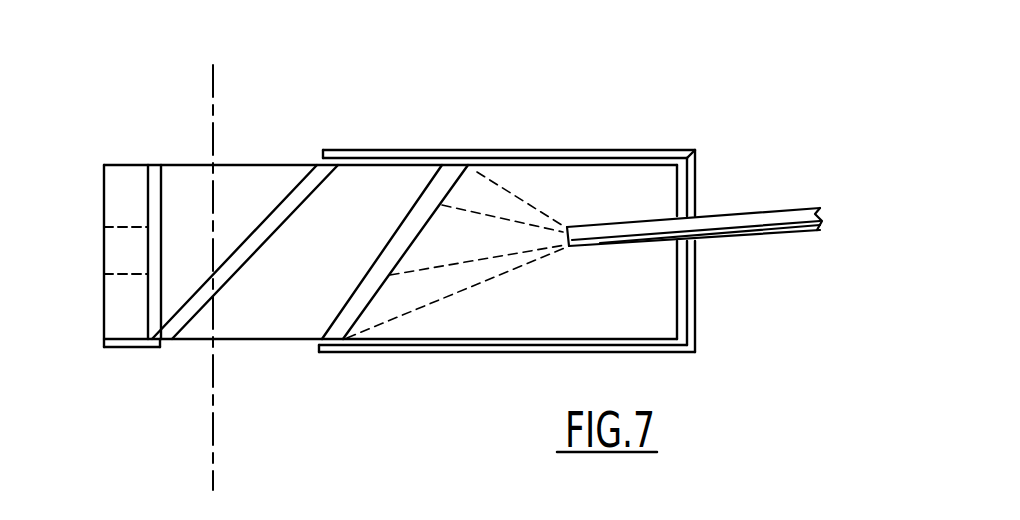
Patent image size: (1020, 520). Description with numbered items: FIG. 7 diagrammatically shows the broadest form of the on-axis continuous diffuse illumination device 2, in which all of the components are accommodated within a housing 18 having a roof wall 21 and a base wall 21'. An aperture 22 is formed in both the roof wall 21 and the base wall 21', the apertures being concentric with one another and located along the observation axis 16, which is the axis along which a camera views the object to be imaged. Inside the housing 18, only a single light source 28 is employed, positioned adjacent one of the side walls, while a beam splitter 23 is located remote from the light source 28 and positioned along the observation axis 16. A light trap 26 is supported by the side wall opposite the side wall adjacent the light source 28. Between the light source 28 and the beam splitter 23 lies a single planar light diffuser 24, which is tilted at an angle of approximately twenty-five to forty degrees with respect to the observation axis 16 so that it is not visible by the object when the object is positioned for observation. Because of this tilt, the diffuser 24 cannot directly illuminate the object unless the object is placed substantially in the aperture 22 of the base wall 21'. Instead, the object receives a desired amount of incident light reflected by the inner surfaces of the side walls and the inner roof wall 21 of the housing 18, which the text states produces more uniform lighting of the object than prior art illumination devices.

The on-axis continuous diffuse illumination device 2 is at (445, 260).
The observation axis 16 is at (215, 114).
The housing 18 is at (528, 246).
The roof wall 21 is at (509, 128).
The base wall 21' is at (507, 370).
The aperture 22 is at (175, 135).
The beam splitter 23 is at (188, 295).
The light diffuser 24 is at (405, 222).
The light trap 26 is at (156, 172).
The light source 28 is at (753, 208).